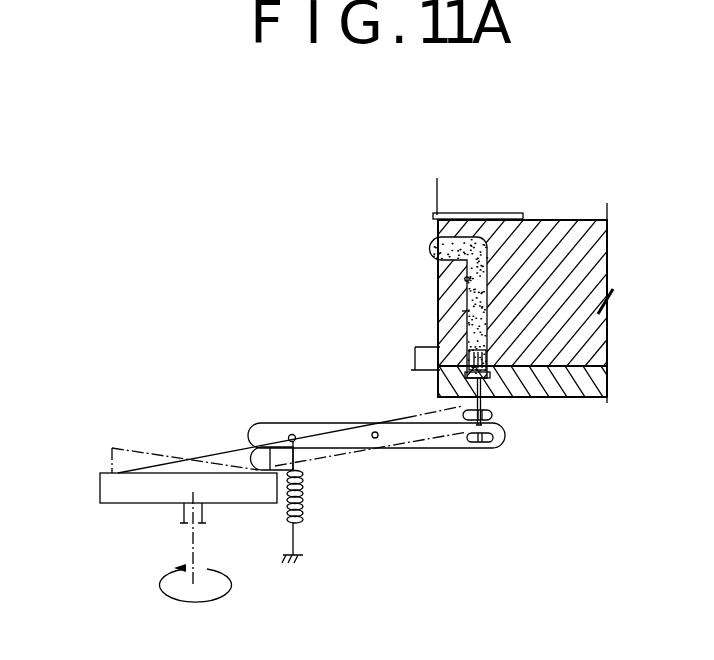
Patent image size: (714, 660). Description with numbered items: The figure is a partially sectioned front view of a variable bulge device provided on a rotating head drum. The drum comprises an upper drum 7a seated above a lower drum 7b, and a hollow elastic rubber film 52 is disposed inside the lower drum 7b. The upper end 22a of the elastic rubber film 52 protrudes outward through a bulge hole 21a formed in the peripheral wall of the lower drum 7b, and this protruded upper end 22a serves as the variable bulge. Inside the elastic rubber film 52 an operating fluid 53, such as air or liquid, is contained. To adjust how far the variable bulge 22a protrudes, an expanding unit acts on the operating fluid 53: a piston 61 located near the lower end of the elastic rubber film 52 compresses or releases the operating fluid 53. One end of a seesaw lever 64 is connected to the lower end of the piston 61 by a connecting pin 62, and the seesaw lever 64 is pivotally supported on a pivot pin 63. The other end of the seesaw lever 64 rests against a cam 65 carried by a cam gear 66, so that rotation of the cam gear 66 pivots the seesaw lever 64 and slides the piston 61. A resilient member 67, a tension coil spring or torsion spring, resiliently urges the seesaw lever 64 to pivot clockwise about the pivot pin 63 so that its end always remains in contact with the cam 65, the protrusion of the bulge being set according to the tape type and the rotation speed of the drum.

The upper drum 7a is at (450, 190).
The bulge hole 21a is at (450, 235).
The upper end of elastic rubber film 22a is at (432, 250).
The elastic rubber film 52 is at (465, 280).
The operating fluid 53 is at (463, 311).
The lower drum 7b is at (440, 333).
The piston 61 is at (483, 398).
The connecting pin 62 is at (480, 443).
The pivot pin 63 is at (373, 432).
The seesaw lever 64 is at (438, 442).
The cam 65 is at (237, 458).
The cam gear 66 is at (102, 493).
The resilient member 67 is at (302, 510).